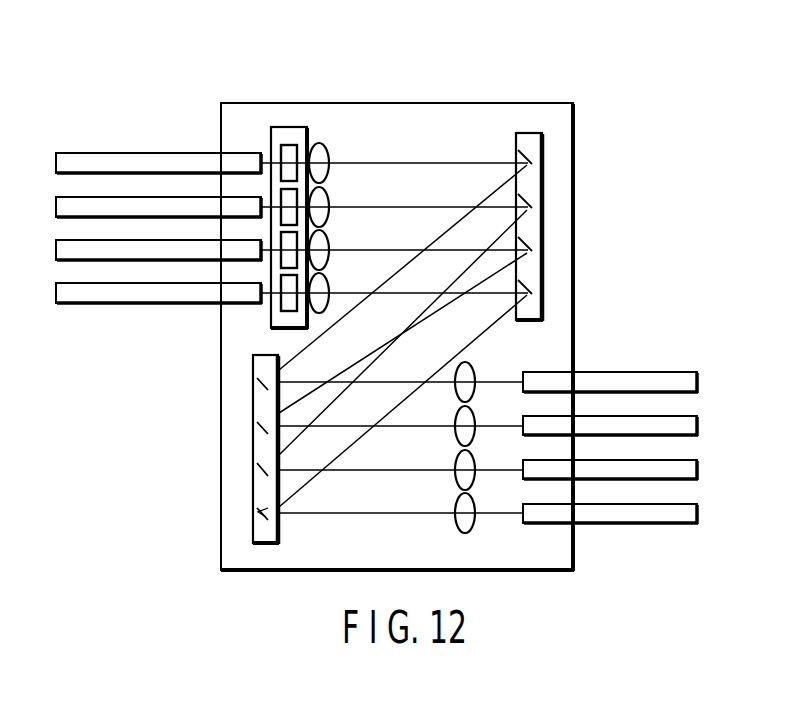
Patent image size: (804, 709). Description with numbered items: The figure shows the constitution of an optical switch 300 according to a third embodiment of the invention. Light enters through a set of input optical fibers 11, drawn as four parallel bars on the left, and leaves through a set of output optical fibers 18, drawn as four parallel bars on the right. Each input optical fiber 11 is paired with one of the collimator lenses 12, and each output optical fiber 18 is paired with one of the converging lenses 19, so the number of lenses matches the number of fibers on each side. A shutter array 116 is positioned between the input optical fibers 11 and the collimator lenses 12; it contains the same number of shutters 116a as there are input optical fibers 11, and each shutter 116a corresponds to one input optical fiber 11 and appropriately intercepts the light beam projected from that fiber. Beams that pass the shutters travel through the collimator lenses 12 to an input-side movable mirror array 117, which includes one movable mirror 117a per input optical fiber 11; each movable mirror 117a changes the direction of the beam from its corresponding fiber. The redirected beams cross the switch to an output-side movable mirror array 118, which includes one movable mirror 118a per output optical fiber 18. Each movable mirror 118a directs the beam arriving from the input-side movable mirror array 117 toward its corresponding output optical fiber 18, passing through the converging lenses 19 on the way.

The optical switch 300 is at (427, 103).
The input optical fibers 11 is at (98, 158).
The collimating lenses 12 is at (330, 152).
The shutter array 116 is at (244, 193).
The shutters 116a is at (279, 148).
The input-side movable mirror array 117 is at (578, 193).
The movable mirrors 117a is at (533, 158).
The output-side movable mirror array 118 is at (217, 449).
The movable mirrors 118a is at (265, 390).
The focusing lenses 19 is at (472, 368).
The output optical fibers 18 is at (668, 523).